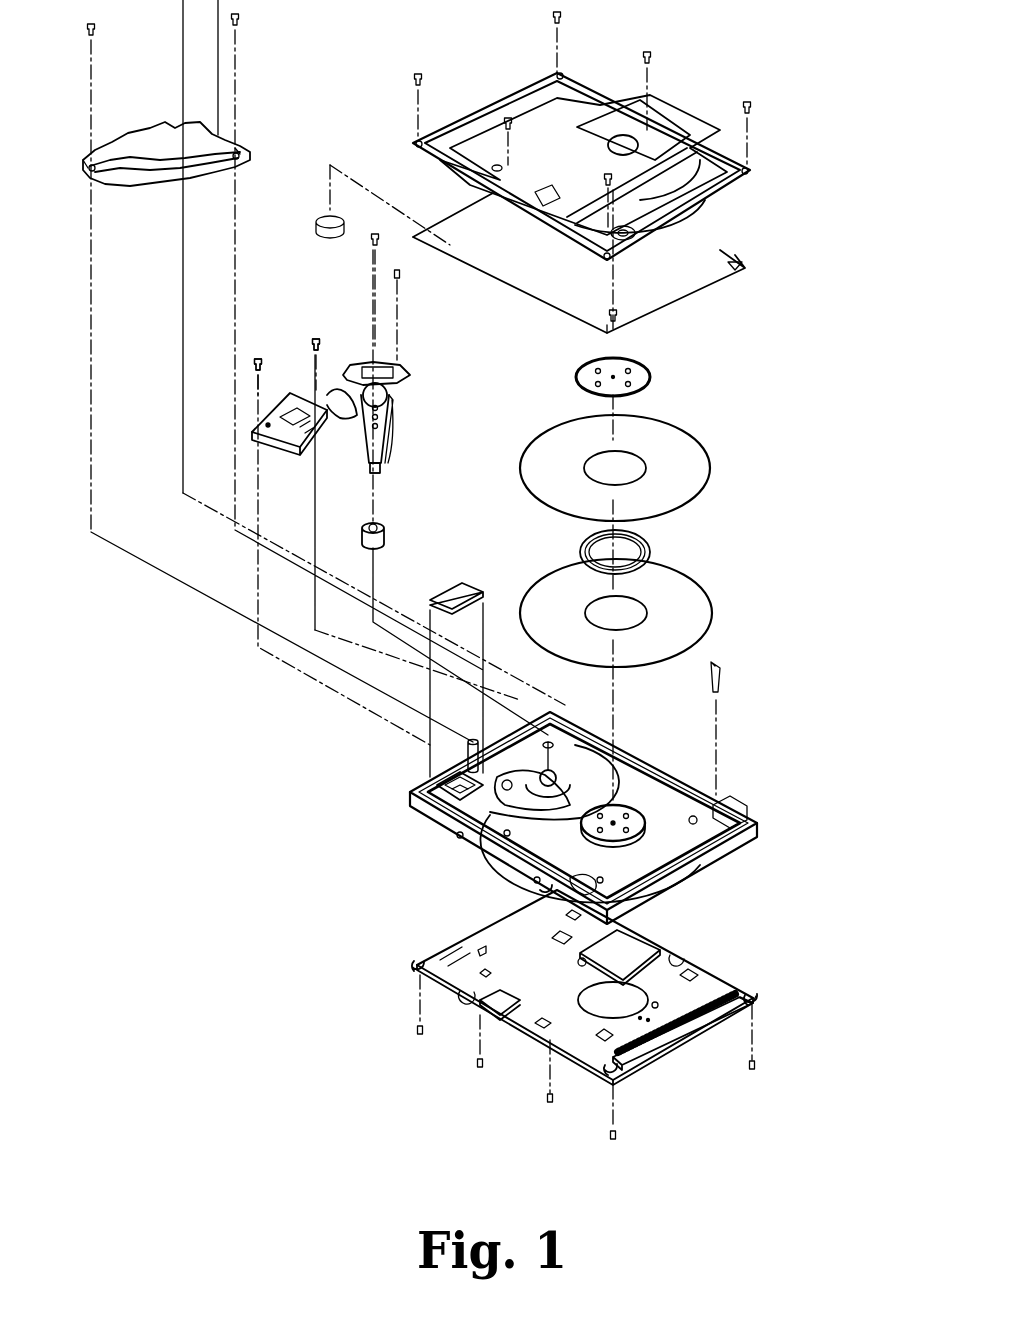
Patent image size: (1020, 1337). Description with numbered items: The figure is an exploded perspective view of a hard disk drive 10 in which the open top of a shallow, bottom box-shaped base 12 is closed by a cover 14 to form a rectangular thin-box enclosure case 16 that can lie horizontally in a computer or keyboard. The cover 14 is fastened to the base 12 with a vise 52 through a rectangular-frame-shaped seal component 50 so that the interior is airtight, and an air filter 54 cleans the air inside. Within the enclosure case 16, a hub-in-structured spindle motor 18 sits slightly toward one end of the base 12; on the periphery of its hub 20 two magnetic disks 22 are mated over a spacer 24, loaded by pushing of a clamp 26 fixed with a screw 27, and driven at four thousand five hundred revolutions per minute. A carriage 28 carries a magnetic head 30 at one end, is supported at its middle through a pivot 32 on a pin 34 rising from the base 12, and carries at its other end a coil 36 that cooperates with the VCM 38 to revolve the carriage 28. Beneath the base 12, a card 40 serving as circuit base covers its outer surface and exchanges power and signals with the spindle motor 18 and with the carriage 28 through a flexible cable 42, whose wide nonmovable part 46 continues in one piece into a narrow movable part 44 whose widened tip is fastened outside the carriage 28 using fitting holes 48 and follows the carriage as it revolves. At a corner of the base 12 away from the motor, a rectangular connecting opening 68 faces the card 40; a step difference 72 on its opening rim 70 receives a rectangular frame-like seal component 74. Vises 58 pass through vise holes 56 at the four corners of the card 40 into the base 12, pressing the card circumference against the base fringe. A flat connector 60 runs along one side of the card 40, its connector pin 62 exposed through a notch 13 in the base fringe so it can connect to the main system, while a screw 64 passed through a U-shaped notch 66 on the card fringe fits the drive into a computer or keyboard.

The hard disk drive 10 is at (766, 246).
The base 12 is at (712, 788).
The notch 13 is at (662, 885).
The cover 14 is at (732, 208).
The enclosure case 16 is at (803, 303).
The spindle motor 18 is at (643, 810).
The hub 20 is at (640, 830).
The magnetic disks 22 is at (677, 497).
The spacer 24 is at (582, 545).
The clamp 26 is at (652, 376).
The screw 27 is at (620, 310).
The carriage 28 is at (393, 410).
The magnetic head 30 is at (385, 468).
The pivot 32 is at (384, 528).
The pin 34 is at (553, 768).
The coil 36 is at (390, 360).
The VCM 38 is at (205, 125).
The card 40 is at (722, 968).
The flexible cable 42 is at (347, 300).
The movable part 44 is at (343, 400).
The nonmovable part 46 is at (282, 380).
The fitting holes 48 is at (258, 420).
The seal component 50 is at (680, 315).
The vise 52 is at (755, 112).
The air filter 54 is at (728, 678).
The vise holes 56 is at (760, 1000).
The vises 58 is at (416, 1032).
The flat connector 60 is at (540, 892).
The connector pin 62 is at (698, 1036).
The screw 64 is at (548, 1098).
The notch 66 is at (482, 1015).
The connecting opening 68 is at (440, 815).
The opening rim 70 is at (450, 775).
The step difference 72 is at (445, 785).
The seal component 74 is at (445, 595).